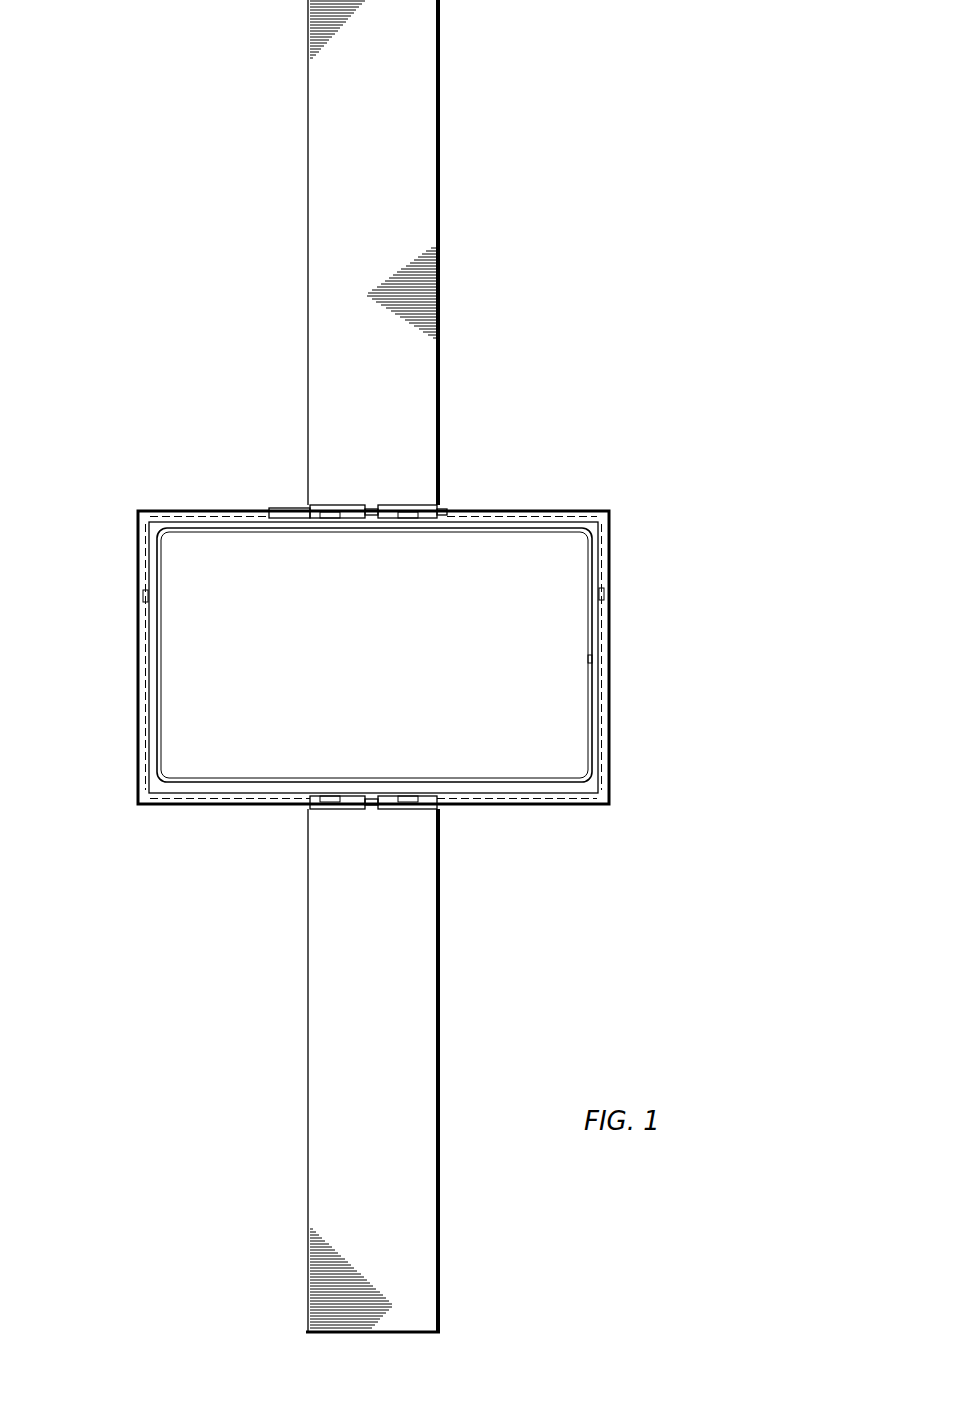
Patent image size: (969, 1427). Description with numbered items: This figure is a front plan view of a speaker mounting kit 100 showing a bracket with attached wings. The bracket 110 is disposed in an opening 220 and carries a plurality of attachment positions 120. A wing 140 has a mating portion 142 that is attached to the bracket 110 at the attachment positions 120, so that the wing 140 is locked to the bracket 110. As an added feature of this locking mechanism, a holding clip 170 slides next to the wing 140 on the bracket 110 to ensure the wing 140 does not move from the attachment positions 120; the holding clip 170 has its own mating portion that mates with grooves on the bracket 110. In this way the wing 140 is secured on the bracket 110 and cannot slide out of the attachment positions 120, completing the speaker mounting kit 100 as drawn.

The speaker mounting kit 100 is at (664, 235).
The bracket 110 is at (572, 520).
The attachment positions 120 is at (530, 508).
The wing 140 is at (440, 113).
The mating portion 142 is at (332, 506).
The holding clip 170 is at (283, 508).
The opening 220 is at (562, 722).